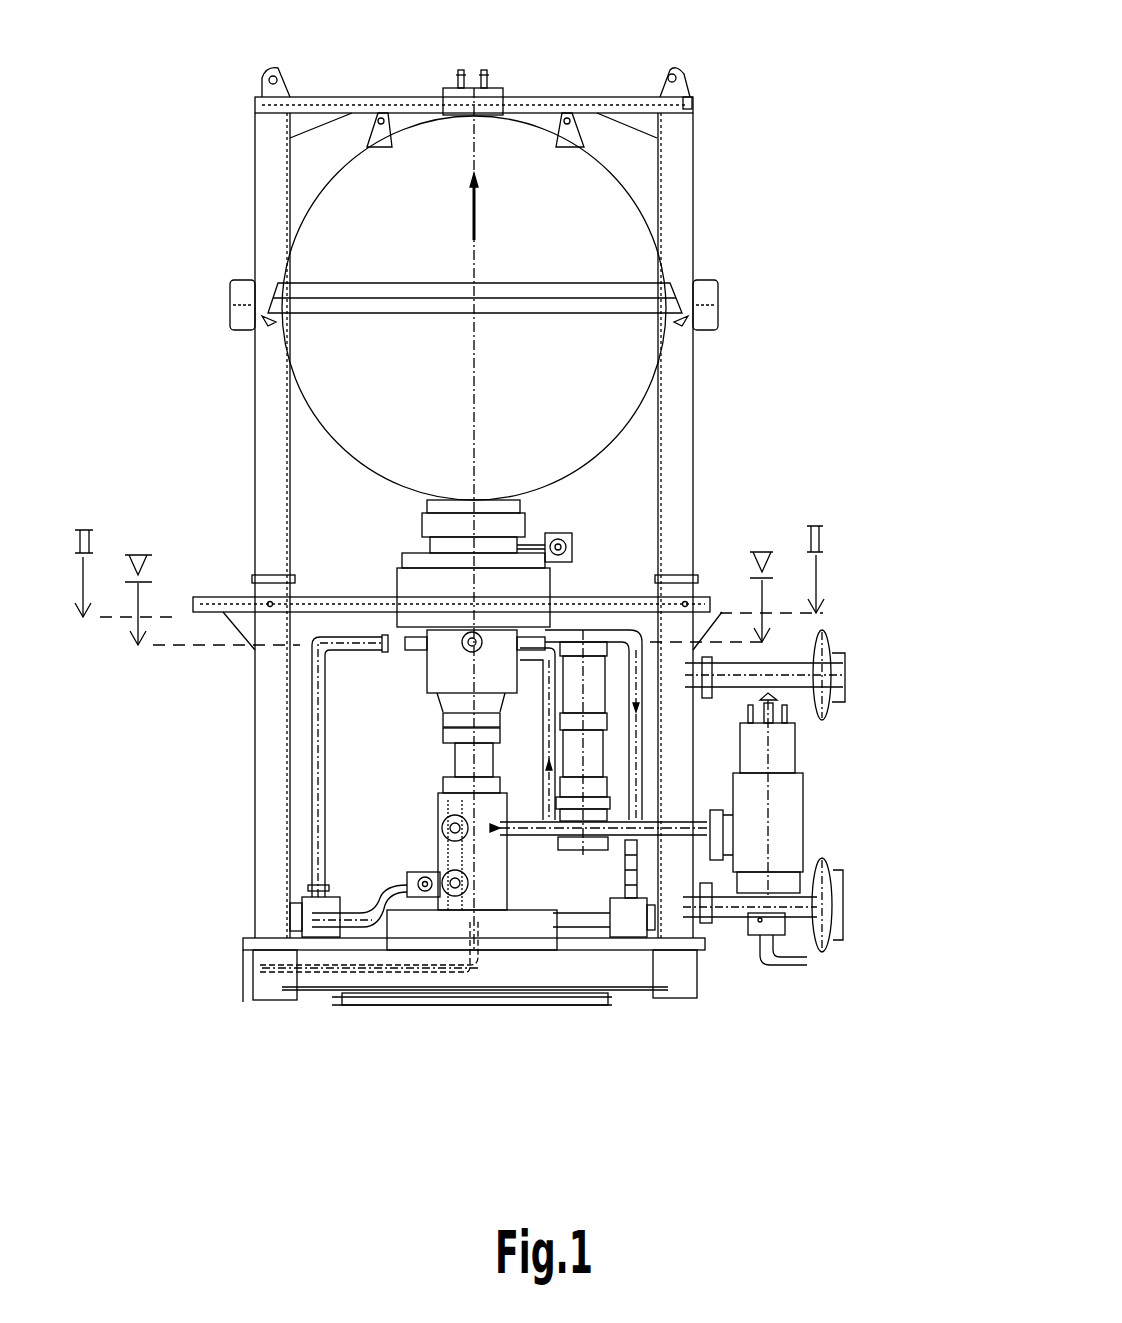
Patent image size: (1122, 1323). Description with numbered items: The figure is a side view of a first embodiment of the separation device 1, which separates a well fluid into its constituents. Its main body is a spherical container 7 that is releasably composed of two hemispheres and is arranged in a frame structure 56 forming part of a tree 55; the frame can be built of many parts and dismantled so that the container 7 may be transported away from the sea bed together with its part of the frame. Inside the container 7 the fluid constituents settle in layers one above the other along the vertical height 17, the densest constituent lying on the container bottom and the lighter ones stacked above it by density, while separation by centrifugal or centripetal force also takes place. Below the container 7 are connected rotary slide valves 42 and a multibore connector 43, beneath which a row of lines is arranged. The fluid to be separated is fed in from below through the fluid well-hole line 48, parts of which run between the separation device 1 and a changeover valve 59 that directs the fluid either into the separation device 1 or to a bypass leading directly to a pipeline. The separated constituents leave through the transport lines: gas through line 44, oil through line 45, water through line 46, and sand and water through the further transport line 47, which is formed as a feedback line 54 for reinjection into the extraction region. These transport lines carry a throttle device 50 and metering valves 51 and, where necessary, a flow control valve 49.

The separation device 1 is at (812, 87).
The spherical container 7 is at (520, 137).
The vertical height 17 is at (474, 210).
The rotary slide valves 42 is at (549, 517).
The multibore connector 43 is at (372, 568).
The transport line 44 is at (547, 871).
The transport line 45 is at (633, 750).
The transport line 46 is at (575, 830).
The transport line 47 is at (369, 997).
The fluid well-hole line 48 is at (315, 757).
The flow control valve 49 is at (592, 670).
The throttle device 50 is at (797, 832).
The metering valves 51 is at (783, 802).
The feedback line 54 is at (317, 973).
The tree 55 is at (168, 424).
The frame structure 56 is at (704, 224).
The changeover valve 59 is at (300, 915).